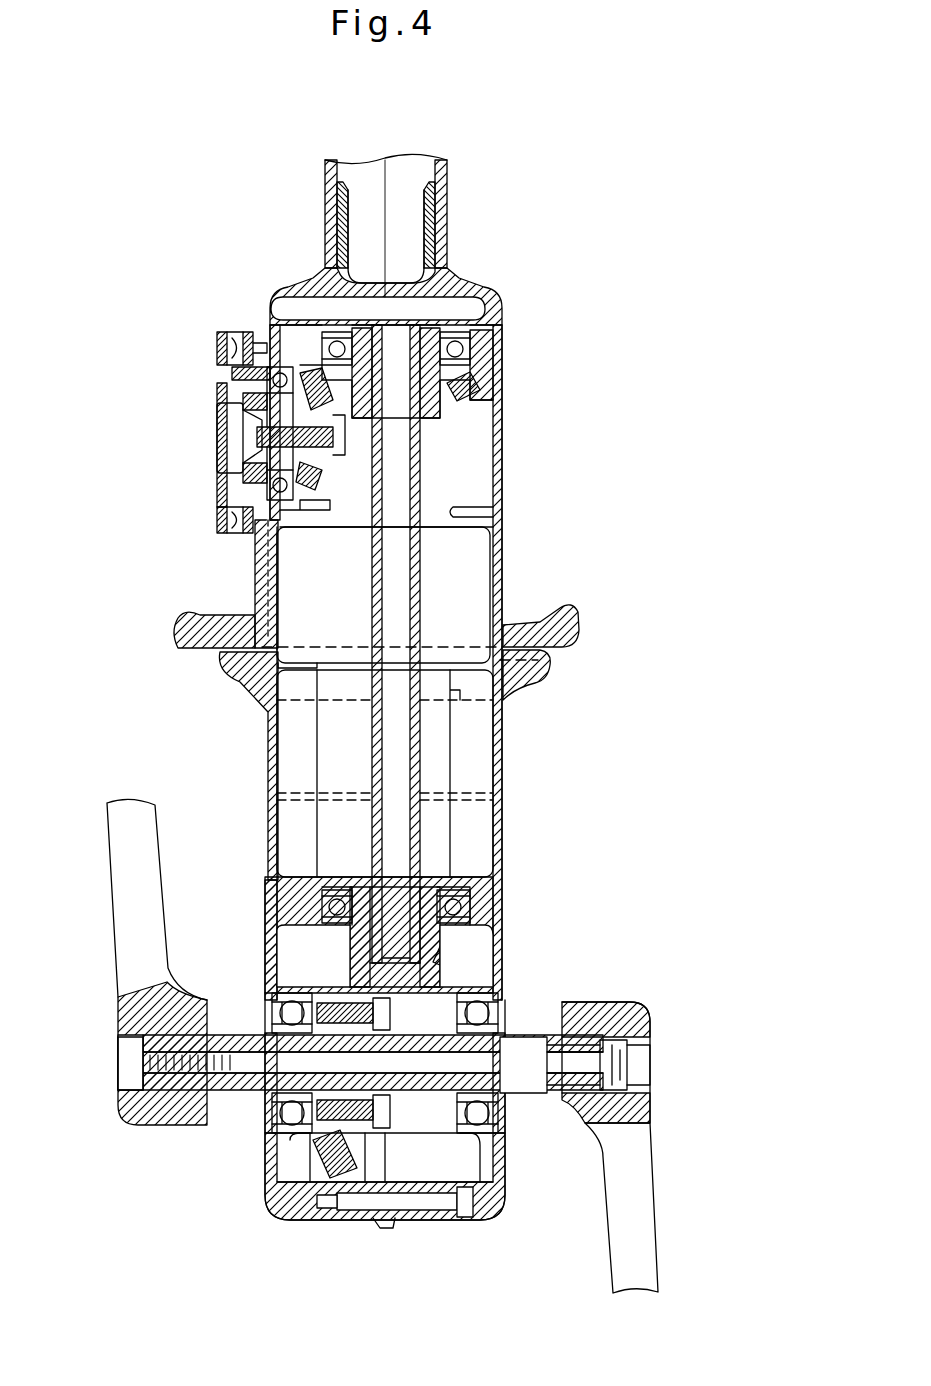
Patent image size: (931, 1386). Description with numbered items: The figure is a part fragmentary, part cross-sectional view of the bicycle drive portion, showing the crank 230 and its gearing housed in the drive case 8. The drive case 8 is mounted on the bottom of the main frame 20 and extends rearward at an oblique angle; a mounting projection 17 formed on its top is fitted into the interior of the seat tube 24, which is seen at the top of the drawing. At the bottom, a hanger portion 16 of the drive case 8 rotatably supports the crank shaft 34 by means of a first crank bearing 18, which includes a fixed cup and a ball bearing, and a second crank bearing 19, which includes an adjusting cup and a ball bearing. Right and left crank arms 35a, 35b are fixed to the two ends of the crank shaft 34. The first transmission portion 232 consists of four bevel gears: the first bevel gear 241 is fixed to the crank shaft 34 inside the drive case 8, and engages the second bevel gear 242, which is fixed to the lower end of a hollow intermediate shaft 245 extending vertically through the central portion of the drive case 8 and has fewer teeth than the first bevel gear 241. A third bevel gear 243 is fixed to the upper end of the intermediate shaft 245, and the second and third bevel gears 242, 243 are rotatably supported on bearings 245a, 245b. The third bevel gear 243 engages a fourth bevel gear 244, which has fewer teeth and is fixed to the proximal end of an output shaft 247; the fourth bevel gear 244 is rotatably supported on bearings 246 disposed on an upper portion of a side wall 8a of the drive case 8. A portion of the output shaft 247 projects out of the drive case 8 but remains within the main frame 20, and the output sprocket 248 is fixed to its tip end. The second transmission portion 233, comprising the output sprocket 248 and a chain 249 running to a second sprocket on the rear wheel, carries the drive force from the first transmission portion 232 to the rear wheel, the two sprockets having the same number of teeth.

The seat tube 24 is at (447, 232).
The mounting projection 17 is at (440, 266).
The first transmission portion 232 is at (524, 500).
The drive case 8 is at (505, 576).
The side wall 8a is at (256, 587).
The main frame 20 is at (560, 646).
The intermediate shaft 245 is at (420, 795).
The bearing 245a is at (470, 350).
The bearing 245b is at (470, 890).
The third bevel gear 243 is at (480, 395).
The second bevel gear 242 is at (440, 950).
The first bevel gear 241 is at (322, 962).
The second transmission portion 233 is at (218, 398).
The fourth bevel gear 244 is at (220, 462).
The bearings 246 is at (248, 340).
The output shaft 247 is at (220, 400).
The output sprocket 248 is at (217, 346).
The chain 249 is at (232, 338).
The crank 230 is at (178, 1152).
The first crank bearing 18 is at (500, 995).
The second crank bearing 19 is at (272, 1118).
The hanger portion 16 is at (515, 1117).
The crank shaft 34 is at (530, 1050).
The right crank arm 35a is at (608, 1002).
The left crank arm 35b is at (183, 1003).